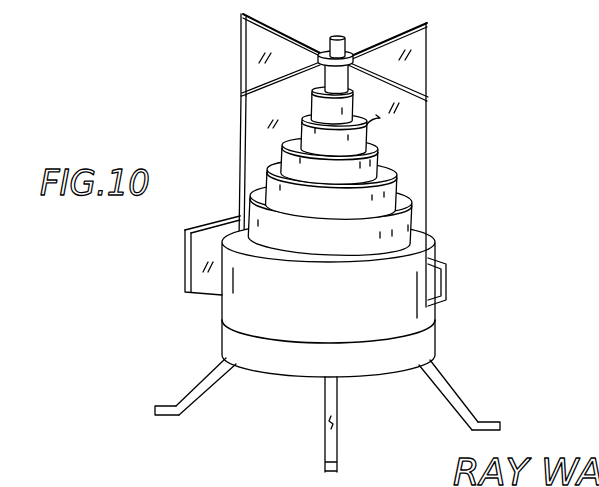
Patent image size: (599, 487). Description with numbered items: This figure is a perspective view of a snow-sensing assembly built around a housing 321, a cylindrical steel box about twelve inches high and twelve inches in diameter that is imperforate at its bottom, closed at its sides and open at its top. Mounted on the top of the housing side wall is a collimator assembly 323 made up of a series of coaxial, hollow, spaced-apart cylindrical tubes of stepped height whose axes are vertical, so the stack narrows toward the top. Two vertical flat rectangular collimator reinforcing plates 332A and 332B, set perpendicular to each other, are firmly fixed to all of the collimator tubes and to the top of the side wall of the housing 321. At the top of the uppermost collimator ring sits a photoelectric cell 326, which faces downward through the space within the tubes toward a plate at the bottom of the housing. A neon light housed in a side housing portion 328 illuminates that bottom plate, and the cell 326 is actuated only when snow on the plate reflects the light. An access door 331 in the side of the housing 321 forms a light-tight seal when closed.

The housing 321 is at (236, 305).
The collimator assembly 323 is at (428, 178).
The photoelectric cell 326 is at (341, 37).
The side housing portion 328 is at (186, 246).
The access door 331 is at (437, 283).
The collimator reinforcing plate 332A is at (243, 44).
The collimator reinforcing plate 332B is at (420, 53).